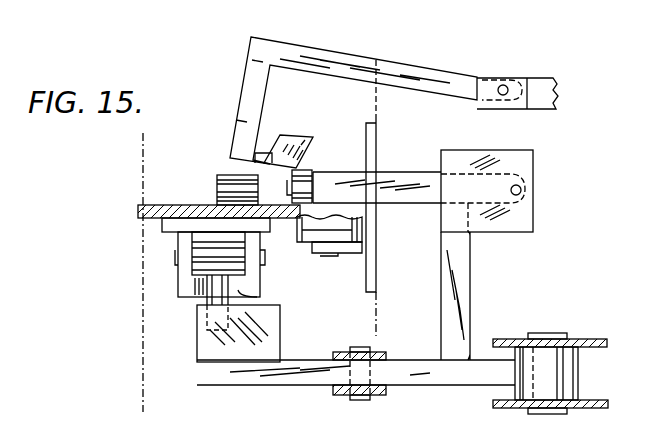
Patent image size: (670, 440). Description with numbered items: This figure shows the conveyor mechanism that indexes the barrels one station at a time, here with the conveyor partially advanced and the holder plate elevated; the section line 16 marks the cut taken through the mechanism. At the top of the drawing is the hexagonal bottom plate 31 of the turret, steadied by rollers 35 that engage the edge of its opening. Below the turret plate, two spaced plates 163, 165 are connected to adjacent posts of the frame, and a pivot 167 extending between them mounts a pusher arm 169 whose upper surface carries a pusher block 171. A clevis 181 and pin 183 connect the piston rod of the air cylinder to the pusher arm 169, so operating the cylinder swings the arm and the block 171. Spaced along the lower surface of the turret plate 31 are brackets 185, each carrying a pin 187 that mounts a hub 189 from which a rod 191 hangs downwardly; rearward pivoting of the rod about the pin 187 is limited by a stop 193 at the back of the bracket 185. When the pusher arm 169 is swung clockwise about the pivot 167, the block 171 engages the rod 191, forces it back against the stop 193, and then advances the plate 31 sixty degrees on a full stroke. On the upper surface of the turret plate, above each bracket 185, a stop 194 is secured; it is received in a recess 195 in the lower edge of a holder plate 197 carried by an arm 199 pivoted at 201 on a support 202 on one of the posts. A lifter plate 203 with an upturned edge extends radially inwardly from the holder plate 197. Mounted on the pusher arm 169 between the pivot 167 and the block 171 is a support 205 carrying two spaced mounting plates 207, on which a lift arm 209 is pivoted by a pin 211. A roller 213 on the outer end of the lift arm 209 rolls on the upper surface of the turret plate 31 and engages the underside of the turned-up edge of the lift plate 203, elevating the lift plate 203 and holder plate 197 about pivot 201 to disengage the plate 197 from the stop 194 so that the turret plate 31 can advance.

The section line 16- 16 is at (159, 143).
The hexagonal bottom plate 31 is at (152, 206).
The rollers 35 is at (363, 232).
The spaced plate 163 is at (592, 339).
The spaced plate 165 is at (595, 408).
The pivot 167 is at (546, 333).
The pusher arm 169 is at (268, 386).
The pusher block 171 is at (197, 350).
The clevis 181 is at (336, 395).
The pin 183 is at (366, 400).
The bracket 185 is at (179, 266).
The pin 187 is at (176, 255).
The hub 189 is at (200, 275).
The rod 191 is at (206, 300).
The stop 193 is at (258, 298).
The stop 194 is at (224, 186).
The recess 195 is at (235, 148).
The plate 197 is at (243, 72).
The arm 199 is at (343, 63).
The pivot 201 is at (503, 85).
The support 202 is at (560, 92).
The lifter plate 203 is at (296, 136).
The support 205 is at (471, 278).
The mounting plates 207 is at (533, 228).
The lift arm 209 is at (405, 173).
The pin 211 is at (522, 190).
The roller 213 is at (306, 175).